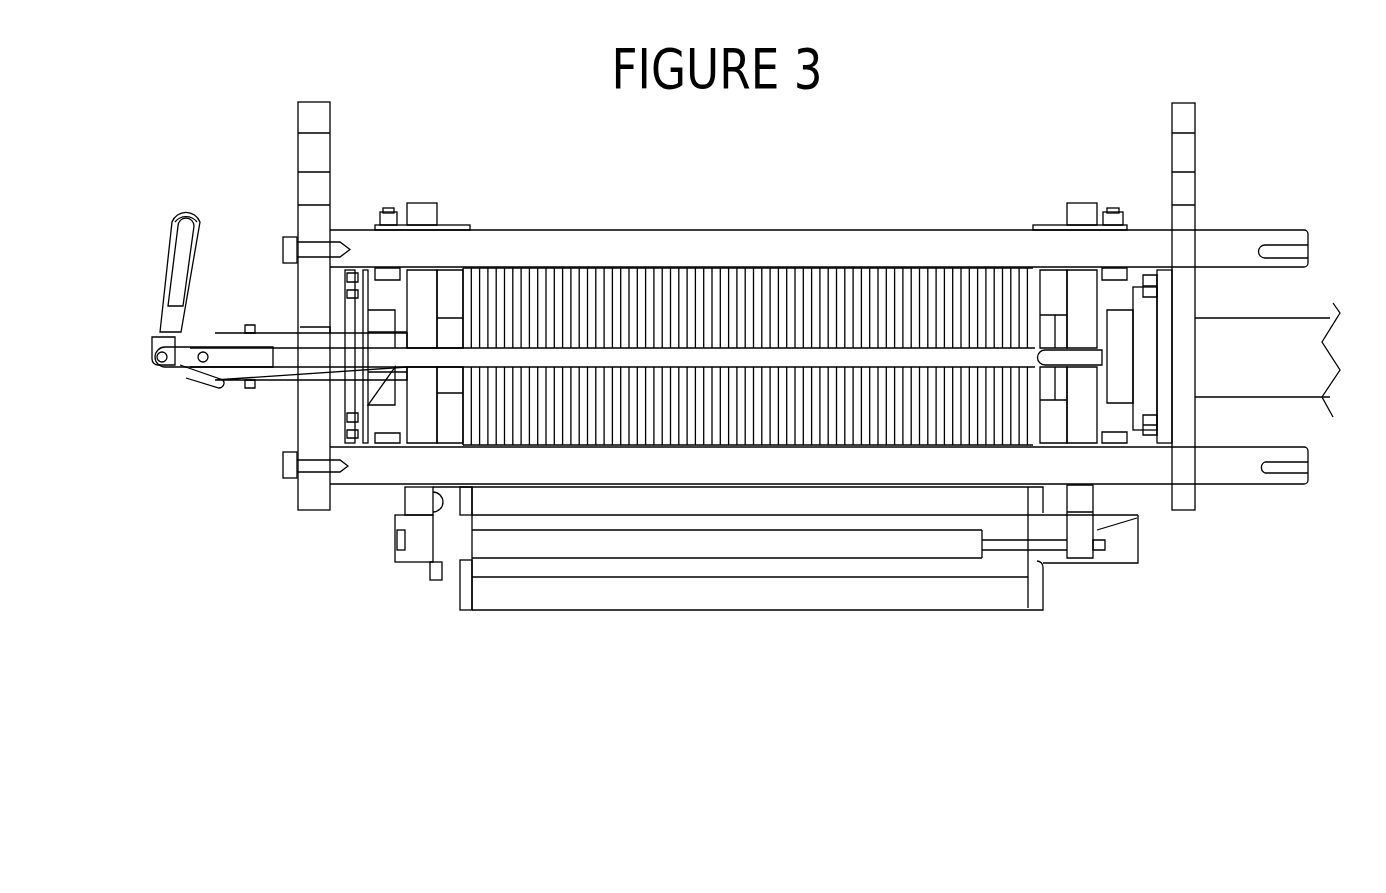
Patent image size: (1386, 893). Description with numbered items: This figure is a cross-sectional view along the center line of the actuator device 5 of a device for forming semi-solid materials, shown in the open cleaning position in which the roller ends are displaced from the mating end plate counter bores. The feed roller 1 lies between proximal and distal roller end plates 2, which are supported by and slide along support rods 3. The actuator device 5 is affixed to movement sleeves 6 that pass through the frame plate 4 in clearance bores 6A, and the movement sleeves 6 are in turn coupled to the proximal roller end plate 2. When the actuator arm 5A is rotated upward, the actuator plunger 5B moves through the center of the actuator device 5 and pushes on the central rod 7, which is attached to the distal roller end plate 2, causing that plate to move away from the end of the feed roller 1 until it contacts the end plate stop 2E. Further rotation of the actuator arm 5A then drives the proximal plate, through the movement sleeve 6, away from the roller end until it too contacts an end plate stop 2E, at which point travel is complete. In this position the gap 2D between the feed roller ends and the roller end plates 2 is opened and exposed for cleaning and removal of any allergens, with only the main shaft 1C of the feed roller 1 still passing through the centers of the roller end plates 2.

The feed roller 1 is at (715, 403).
The main shaft 1C is at (1300, 364).
The roller end plate 2 is at (415, 403).
The gap 2D is at (448, 289).
The end plate stop 2E is at (388, 216).
The support rod 3 is at (853, 252).
The frame plate 4 is at (314, 407).
The actuator device 5 is at (192, 373).
The actuator arm 5A is at (187, 226).
The actuator plunger 5B is at (273, 357).
The movement sleeve 6 is at (373, 373).
The clearance bore 6A is at (312, 333).
The central rod 7 is at (1017, 357).